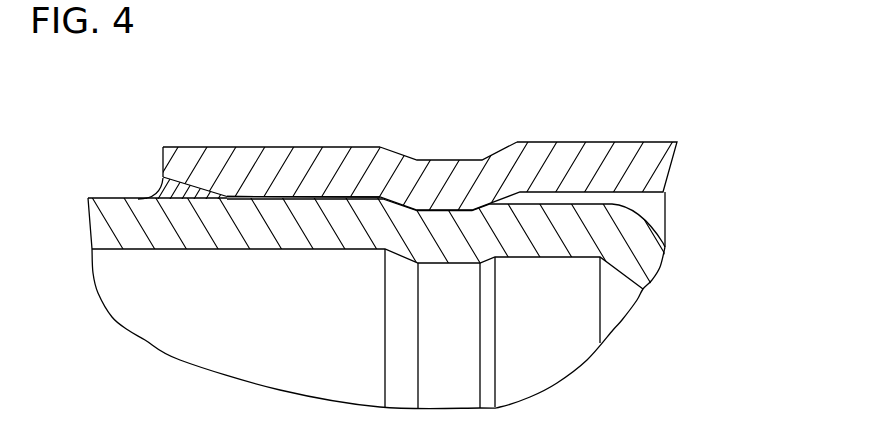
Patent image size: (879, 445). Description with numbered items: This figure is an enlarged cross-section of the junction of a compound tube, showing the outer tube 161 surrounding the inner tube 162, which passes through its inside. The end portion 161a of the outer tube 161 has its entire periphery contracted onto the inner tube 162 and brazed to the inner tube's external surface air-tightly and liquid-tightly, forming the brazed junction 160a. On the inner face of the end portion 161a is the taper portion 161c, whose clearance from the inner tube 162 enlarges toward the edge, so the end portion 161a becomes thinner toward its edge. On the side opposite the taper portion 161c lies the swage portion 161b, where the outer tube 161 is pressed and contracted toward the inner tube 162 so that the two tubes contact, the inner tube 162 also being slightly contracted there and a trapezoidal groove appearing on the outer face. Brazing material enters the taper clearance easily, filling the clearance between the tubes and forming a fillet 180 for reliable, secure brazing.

The outer tube 161 is at (618, 153).
The end portion 161a is at (245, 163).
The swage portion 161b is at (447, 160).
The taper portion 161c is at (193, 188).
The brazed junction 160a is at (282, 193).
The fillet 180 is at (157, 195).
The inner tube 162 is at (107, 218).